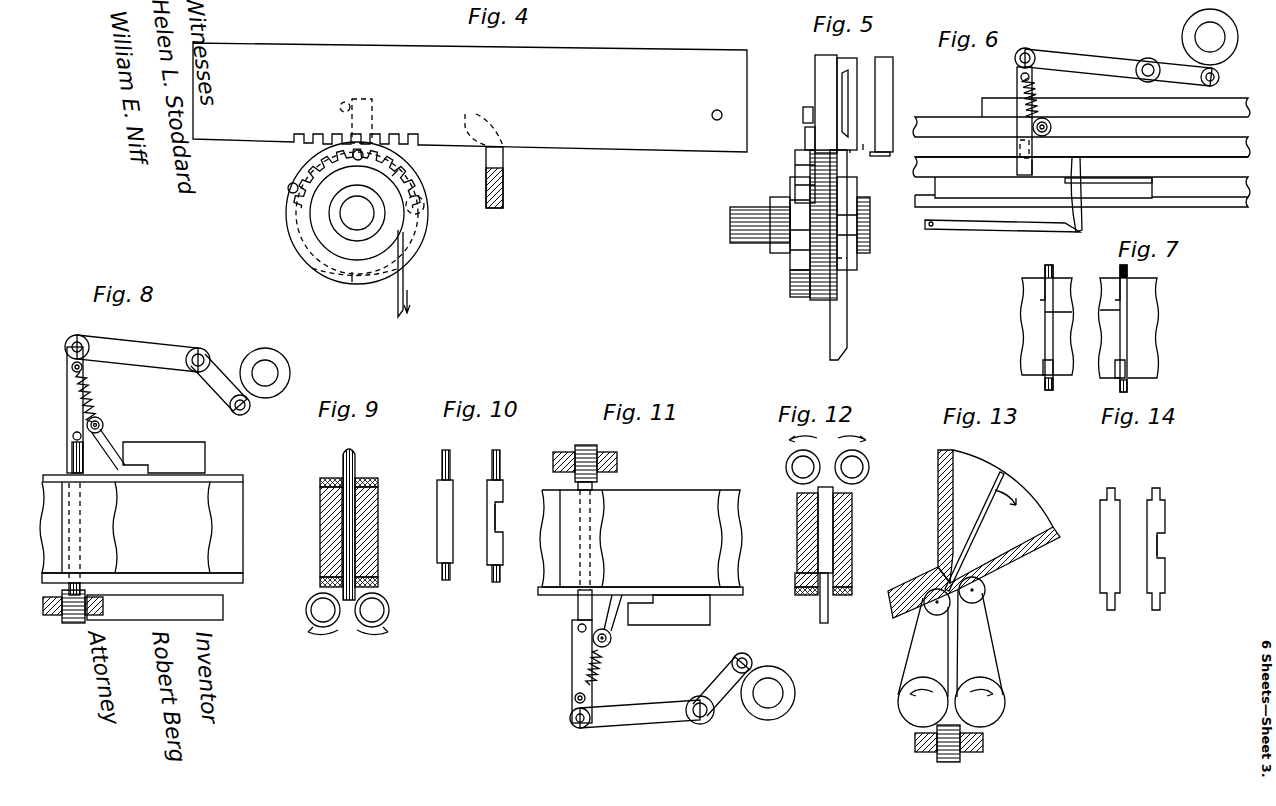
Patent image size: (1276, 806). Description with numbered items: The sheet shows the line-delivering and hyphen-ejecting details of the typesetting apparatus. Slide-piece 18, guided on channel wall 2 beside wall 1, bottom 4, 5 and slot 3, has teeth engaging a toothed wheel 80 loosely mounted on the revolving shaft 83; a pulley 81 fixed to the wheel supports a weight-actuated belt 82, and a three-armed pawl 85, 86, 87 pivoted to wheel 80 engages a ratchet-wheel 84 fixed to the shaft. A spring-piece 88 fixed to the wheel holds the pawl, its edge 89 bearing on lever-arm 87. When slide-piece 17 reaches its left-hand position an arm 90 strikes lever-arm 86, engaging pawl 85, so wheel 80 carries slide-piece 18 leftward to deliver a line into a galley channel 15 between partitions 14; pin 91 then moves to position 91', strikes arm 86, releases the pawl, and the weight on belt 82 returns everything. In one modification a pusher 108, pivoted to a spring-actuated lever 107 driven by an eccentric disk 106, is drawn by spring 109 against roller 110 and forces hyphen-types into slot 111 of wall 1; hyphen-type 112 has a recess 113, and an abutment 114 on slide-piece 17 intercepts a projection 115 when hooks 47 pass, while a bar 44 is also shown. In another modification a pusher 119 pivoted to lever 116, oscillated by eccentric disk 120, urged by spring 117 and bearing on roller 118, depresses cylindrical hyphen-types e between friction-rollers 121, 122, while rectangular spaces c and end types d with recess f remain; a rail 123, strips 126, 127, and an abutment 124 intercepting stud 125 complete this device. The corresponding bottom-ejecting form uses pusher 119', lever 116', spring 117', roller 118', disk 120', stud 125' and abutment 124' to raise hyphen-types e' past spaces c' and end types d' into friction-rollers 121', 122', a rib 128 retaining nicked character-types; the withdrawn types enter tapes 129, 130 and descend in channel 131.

In FIG. 5, the channel wall 1 is at (884, 104).
In FIG. 6, the channel wall 1 is at (1082, 177).
In FIG. 7, the channel wall 1 is at (1108, 292).
In FIG. 8, the channel wall 1 is at (55, 527).
In FIG. 9, the channel wall 1 is at (320, 497).
In FIG. 11, the channel wall 1 is at (558, 538).
In FIG. 12, the channel wall 1 is at (797, 503).
In FIG. 5, the channel wall 2 is at (851, 106).
In FIG. 6, the channel wall 2 is at (1081, 147).
In FIG. 9, the channel wall 2 is at (378, 497).
In FIG. 12, the channel wall 2 is at (852, 507).
In FIG. 5, the slot 3 is at (866, 137).
In FIG. 8, the channel bottom 4 is at (135, 580).
In FIG. 9, the channel bottom 4 is at (320, 581).
In FIG. 11, the channel bottom 4 is at (605, 586).
In FIG. 12, the channel bottom 4 is at (800, 596).
In FIG. 9, the channel bottom 5 is at (378, 581).
In FIG. 12, the channel bottom 5 is at (845, 596).
In FIG. 5, the partition 14 is at (882, 157).
In FIG. 5, the galley channel 15 is at (850, 153).
In FIG. 6, the slide-piece 17 is at (1043, 187).
In FIG. 8, the slide-piece 17 is at (141, 527).
In FIG. 11, the slide-piece 17 is at (641, 538).
In FIG. 4, the slide-piece 18 is at (470, 97).
In FIG. 5, the slide-piece 18 is at (815, 68).
In FIG. 6, the slide-piece 18 is at (1116, 110).
In FIG. 6, the bar 44 is at (995, 227).
In FIG. 6, the hook 47 is at (1082, 171).
In FIG. 4, the toothed wheel 80 is at (421, 249).
In FIG. 5, the toothed wheel 80 is at (810, 298).
In FIG. 4, the pulley 81 is at (322, 238).
In FIG. 5, the pulley 81 is at (860, 215).
In FIG. 4, the weight-actuated belt 82 is at (406, 287).
In FIG. 5, the weight-actuated belt 82 is at (850, 187).
In FIG. 4, the revolving shaft 83 is at (346, 215).
In FIG. 5, the revolving shaft 83 is at (740, 220).
In FIG. 4, the ratchet-wheel 84 is at (289, 190).
In FIG. 5, the ratchet-wheel 84 is at (795, 258).
In FIG. 4, the pawl arm 85 is at (298, 177).
In FIG. 5, the pawl arm 85 is at (800, 170).
In FIG. 4, the lever-arm 86 is at (372, 108).
In FIG. 5, the lever-arm 86 is at (805, 135).
In FIG. 4, the lever-arm 87 is at (400, 174).
In FIG. 4, the spring-piece 88 is at (420, 224).
In FIG. 5, the spring-piece 88 is at (795, 281).
In FIG. 4, the spring edge 89 is at (416, 199).
In FIG. 4, the arm 90 is at (503, 158).
In FIG. 4, the pin 91 is at (701, 116).
In FIG. 5, the pin 91 is at (795, 105).
In FIG. 4, the pin dotted position 91' is at (324, 104).
In FIG. 6, the eccentric disk 106 is at (1222, 61).
In FIG. 6, the spring-actuated lever 107 is at (1117, 62).
In FIG. 6, the pusher 108 is at (1017, 95).
In FIG. 6, the spring 109 is at (1020, 108).
In FIG. 6, the roller 110 is at (1052, 128).
In FIG. 6, the slot 111 is at (1017, 170).
In FIG. 7, the slot 111 is at (1120, 326).
In FIG. 7, the hyphen-type 112 is at (1115, 365).
In FIG. 7, the recess 113 is at (1100, 310).
In FIG. 6, the abutment 114 is at (1150, 180).
In FIG. 6, the projection 115 is at (1032, 165).
In FIG. 8, the spring-actuated lever 116 is at (157, 375).
In FIG. 11, the spring-actuated lever 116' is at (661, 690).
In FIG. 8, the spring 117 is at (102, 397).
In FIG. 11, the spring 117' is at (570, 667).
In FIG. 8, the roller 118 is at (112, 437).
In FIG. 11, the roller 118' is at (608, 619).
In FIG. 8, the pusher 119 is at (61, 410).
In FIG. 11, the pusher 119' is at (565, 671).
In FIG. 8, the eccentric disk 120 is at (265, 386).
In FIG. 11, the eccentric disk 120' is at (774, 684).
In FIG. 8, the friction-roller 121 is at (88, 606).
In FIG. 9, the friction-roller 121 is at (305, 614).
In FIG. 11, the friction-roller 121' is at (601, 462).
In FIG. 12, the friction-roller 121' is at (785, 460).
In FIG. 13, the friction-roller 121' is at (949, 756).
In FIG. 9, the friction-roller 122 is at (386, 614).
In FIG. 12, the friction-roller 122' is at (870, 460).
In FIG. 8, the rail 123 is at (155, 607).
In FIG. 8, the abutment 124 is at (164, 457).
In FIG. 11, the abutment 124' is at (669, 610).
In FIG. 8, the stud 125 is at (57, 429).
In FIG. 11, the stud 125' is at (562, 622).
In FIG. 8, the guide strip 126 is at (135, 482).
In FIG. 9, the guide strip 126 is at (330, 478).
In FIG. 9, the guide strip 127 is at (370, 473).
In FIG. 12, the rib 128 is at (797, 577).
In FIG. 13, the tape 129 is at (924, 658).
In FIG. 13, the tape 130 is at (980, 652).
In FIG. 13, the channel 131 is at (890, 616).
In FIG. 10, the space c is at (452, 515).
In FIG. 14, the space c' is at (1099, 549).
In FIG. 10, the end type d is at (504, 516).
In FIG. 14, the end type d' is at (1170, 549).
In FIG. 8, the hyphen-type e is at (60, 519).
In FIG. 9, the hyphen-type e is at (323, 524).
In FIG. 11, the hyphen-type e' is at (572, 551).
In FIG. 12, the hyphen-type e' is at (802, 555).
In FIG. 13, the hyphen-type e' is at (980, 531).
In FIG. 10, the recess f is at (497, 522).
In FIG. 14, the recess f is at (1158, 546).